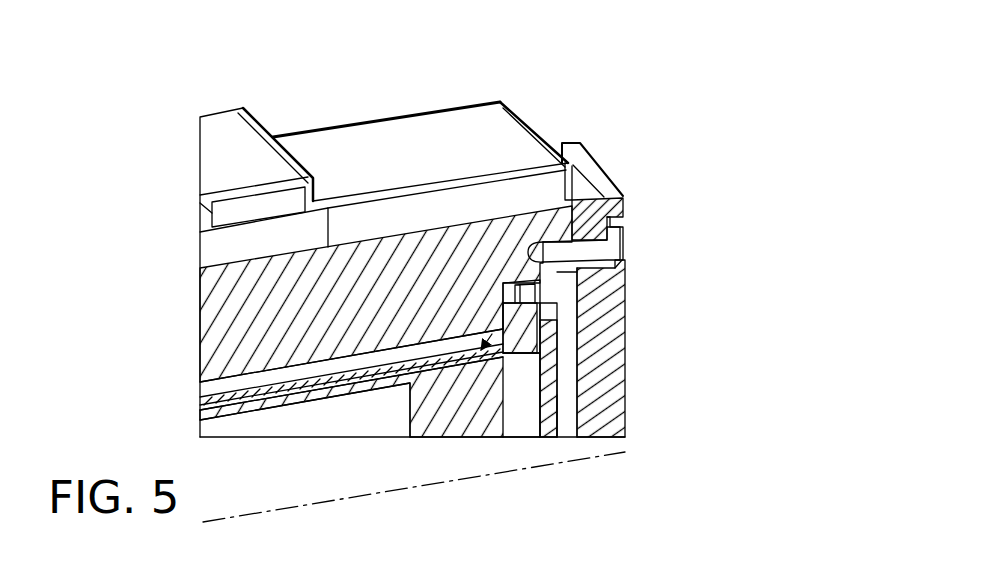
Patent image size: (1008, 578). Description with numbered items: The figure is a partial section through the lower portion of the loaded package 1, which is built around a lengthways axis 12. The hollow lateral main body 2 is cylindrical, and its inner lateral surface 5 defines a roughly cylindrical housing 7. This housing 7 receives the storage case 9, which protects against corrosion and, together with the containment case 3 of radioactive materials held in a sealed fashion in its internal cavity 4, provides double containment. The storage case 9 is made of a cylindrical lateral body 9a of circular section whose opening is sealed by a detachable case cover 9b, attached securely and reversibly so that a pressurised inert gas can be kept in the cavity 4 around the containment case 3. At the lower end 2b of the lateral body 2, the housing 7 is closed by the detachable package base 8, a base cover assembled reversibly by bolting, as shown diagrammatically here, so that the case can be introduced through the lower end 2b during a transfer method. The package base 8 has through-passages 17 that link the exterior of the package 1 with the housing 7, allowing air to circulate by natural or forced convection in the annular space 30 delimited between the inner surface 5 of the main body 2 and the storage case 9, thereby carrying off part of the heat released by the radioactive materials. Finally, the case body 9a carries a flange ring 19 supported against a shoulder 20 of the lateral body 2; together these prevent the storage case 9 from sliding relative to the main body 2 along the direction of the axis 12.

The package 1 is at (186, 100).
The hollow lateral main body 2 is at (218, 305).
The lower end 2b is at (585, 204).
The containment case 3 is at (398, 430).
The cavity 4 is at (522, 427).
The inner lateral surface 5 is at (252, 384).
The housing 7 is at (260, 378).
The package base 8 is at (612, 312).
The storage case 9 is at (533, 314).
The lateral body of case 9a is at (453, 362).
The case cover 9b is at (580, 425).
The lengthways axis 12 is at (624, 453).
The through-passages 17 is at (580, 383).
The flange ring 19 is at (589, 218).
The shoulder 20 is at (533, 354).
The annular space 30 is at (358, 372).